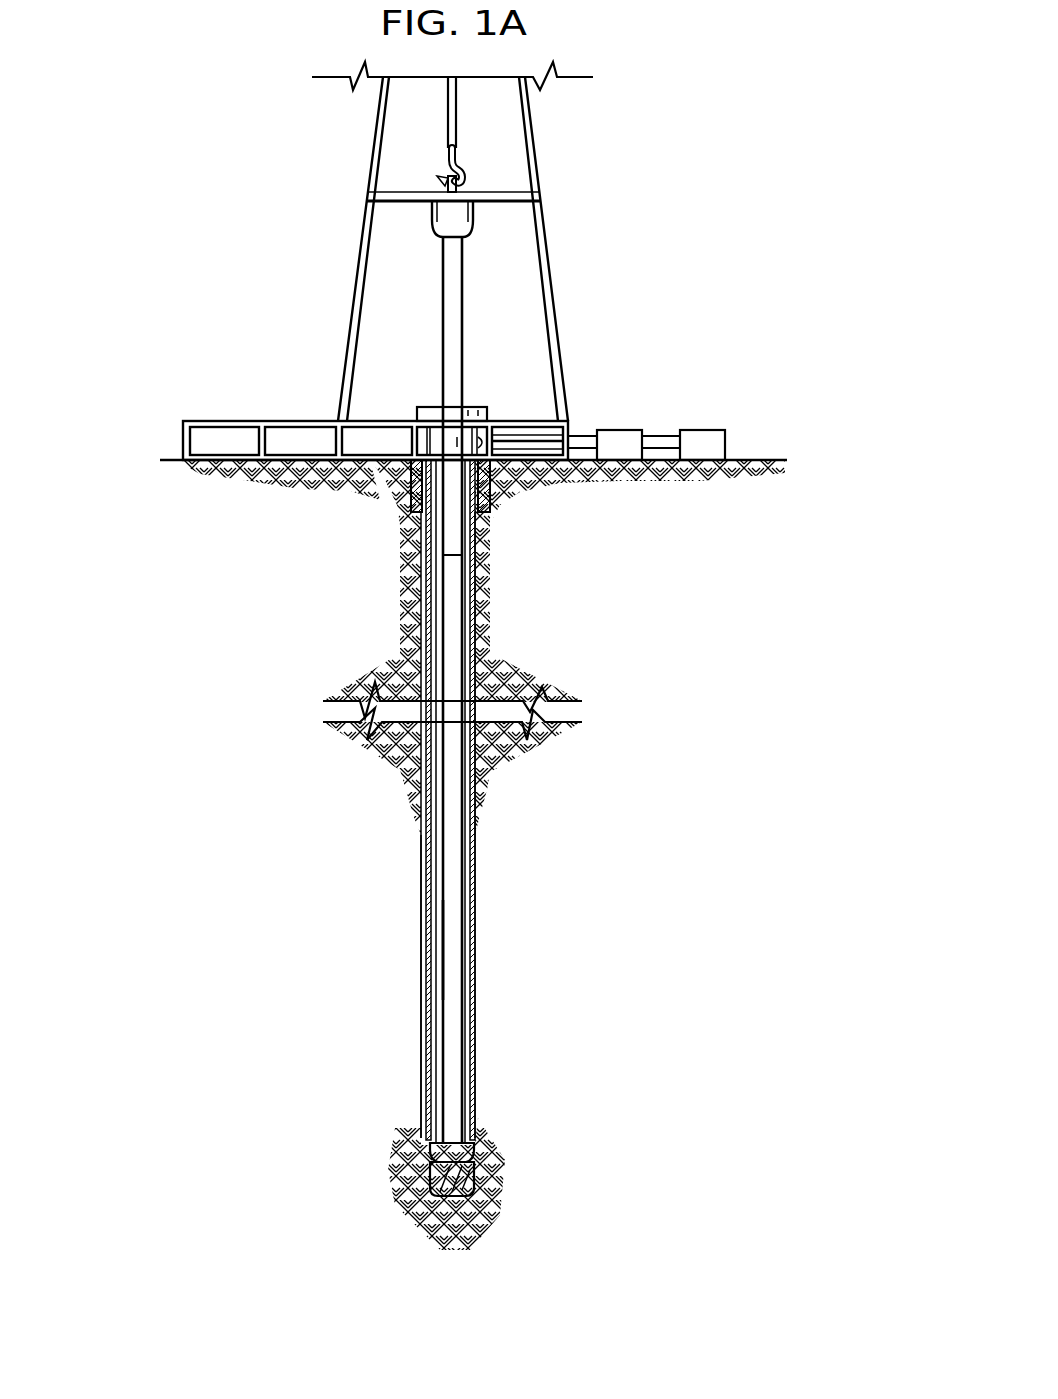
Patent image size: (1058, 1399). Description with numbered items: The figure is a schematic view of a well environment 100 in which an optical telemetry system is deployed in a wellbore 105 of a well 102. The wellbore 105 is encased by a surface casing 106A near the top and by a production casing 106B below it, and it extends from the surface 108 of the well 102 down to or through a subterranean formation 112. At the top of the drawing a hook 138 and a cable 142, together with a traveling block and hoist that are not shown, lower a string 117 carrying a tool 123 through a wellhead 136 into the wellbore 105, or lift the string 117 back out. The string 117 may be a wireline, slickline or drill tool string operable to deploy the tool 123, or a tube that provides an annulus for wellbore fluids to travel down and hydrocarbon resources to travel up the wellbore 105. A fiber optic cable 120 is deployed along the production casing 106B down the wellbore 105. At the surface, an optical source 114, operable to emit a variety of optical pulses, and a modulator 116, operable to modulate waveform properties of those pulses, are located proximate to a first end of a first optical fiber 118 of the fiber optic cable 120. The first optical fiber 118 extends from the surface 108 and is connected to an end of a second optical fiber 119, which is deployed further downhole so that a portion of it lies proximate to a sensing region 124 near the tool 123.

The well environment 100 is at (300, 228).
The well 102 is at (478, 398).
The wellbore 105 is at (467, 867).
The surface casing 106A is at (492, 488).
The production casing 106B is at (430, 980).
The surface 108 is at (758, 458).
The subterranean formation 112 is at (480, 855).
The optical source 114 is at (703, 430).
The modulator 116 is at (620, 428).
The string 117 is at (462, 937).
The first optical fiber 118 is at (420, 572).
The second optical fiber 119 is at (420, 673).
The fiber optic cable 120 is at (420, 880).
The tool 123 is at (470, 1160).
The sensing region 124 is at (378, 1170).
The wellhead 136 is at (428, 404).
The hook 138 is at (468, 173).
The cable 142 is at (447, 134).